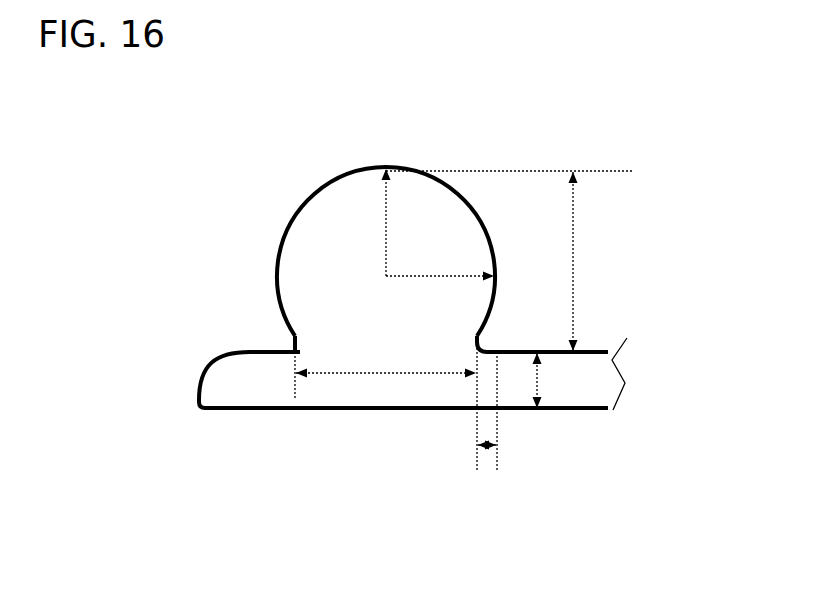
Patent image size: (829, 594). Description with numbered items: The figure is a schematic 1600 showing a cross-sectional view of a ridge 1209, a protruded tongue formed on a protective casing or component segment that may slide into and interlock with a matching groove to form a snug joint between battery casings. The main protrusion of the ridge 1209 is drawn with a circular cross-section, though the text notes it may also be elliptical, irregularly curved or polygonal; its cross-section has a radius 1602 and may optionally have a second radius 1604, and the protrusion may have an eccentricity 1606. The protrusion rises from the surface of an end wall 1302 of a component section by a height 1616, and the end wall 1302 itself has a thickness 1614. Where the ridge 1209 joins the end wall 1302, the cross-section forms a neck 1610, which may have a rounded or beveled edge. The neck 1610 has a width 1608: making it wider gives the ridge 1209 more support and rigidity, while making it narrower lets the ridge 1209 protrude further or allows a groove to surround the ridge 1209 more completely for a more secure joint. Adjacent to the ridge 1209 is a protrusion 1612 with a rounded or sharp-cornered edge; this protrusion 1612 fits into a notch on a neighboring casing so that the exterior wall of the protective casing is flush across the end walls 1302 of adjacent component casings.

The schematic 1600 is at (423, 72).
The ridge 1209 is at (292, 192).
The end wall 1302 is at (559, 412).
The radius 1602 is at (390, 213).
The second radius 1604 is at (453, 271).
The eccentricity 1606 is at (487, 462).
The width 1608 is at (378, 377).
The neck 1610 is at (289, 345).
The protrusion 1612 is at (195, 371).
The thickness 1614 is at (543, 383).
The height 1616 is at (576, 304).